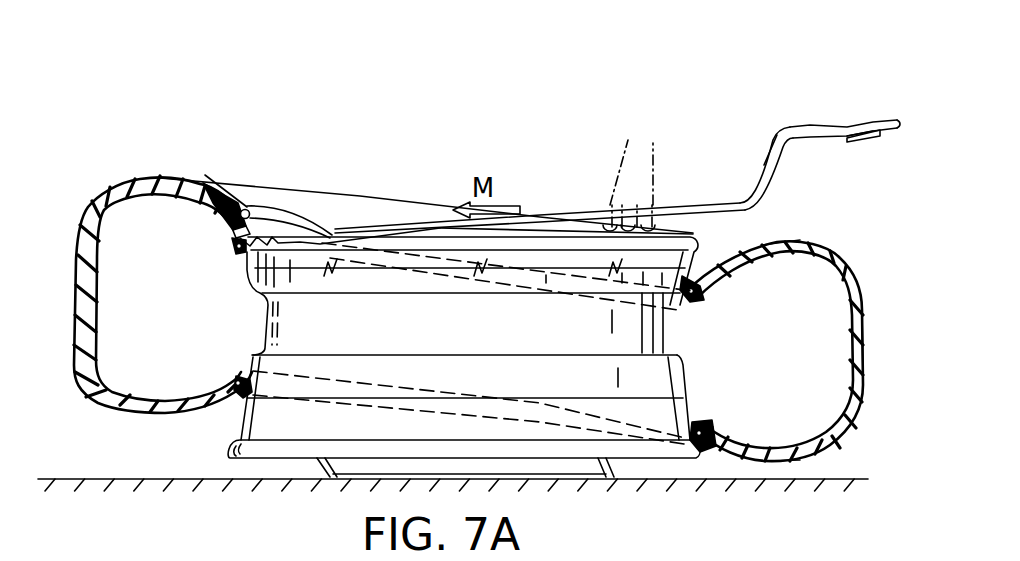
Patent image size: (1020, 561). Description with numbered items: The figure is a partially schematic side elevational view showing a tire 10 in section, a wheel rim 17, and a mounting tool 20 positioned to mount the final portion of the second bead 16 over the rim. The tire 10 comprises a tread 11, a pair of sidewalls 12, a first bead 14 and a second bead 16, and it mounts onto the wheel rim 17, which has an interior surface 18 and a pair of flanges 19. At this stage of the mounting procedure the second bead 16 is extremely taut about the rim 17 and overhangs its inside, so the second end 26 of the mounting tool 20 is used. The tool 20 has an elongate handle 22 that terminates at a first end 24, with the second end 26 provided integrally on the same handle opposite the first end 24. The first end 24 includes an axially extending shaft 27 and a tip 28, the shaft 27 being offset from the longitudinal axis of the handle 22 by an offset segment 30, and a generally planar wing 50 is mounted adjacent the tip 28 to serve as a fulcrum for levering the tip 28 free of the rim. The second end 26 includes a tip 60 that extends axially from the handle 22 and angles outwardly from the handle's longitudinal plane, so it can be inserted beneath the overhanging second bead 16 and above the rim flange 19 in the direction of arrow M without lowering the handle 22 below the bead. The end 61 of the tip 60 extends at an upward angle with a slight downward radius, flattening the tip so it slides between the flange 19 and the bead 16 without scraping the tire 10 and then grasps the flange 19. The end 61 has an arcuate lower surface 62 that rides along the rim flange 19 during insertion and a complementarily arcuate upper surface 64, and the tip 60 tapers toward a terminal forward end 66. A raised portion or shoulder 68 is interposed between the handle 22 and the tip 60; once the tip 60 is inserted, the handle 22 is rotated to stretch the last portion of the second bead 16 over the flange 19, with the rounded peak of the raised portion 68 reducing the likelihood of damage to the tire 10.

The tire 10 is at (834, 240).
The tread 11 is at (865, 320).
The sidewalls 12 is at (786, 240).
The first bead 14 is at (690, 430).
The second bead 16 is at (694, 292).
The wheel rim 17 is at (686, 375).
The interior surface 18 is at (680, 393).
The flanges 19 is at (697, 233).
The mounting tool 20 is at (673, 188).
The handle 22 is at (568, 236).
The first end 24 is at (823, 112).
The second end 26 is at (292, 234).
The shaft 27 is at (822, 140).
The tip 28 is at (887, 118).
The offset segment 30 is at (773, 156).
The wing 50 is at (866, 140).
The tip 60 is at (246, 256).
The end 61 is at (254, 210).
The lower surface 62 is at (238, 244).
The upper surface 64 is at (240, 203).
The terminal forward end 66 is at (236, 230).
The raised portion 68 is at (276, 232).